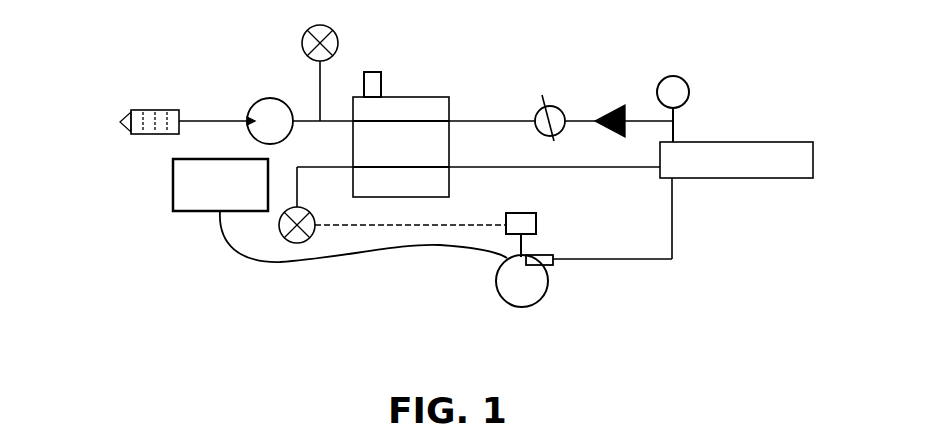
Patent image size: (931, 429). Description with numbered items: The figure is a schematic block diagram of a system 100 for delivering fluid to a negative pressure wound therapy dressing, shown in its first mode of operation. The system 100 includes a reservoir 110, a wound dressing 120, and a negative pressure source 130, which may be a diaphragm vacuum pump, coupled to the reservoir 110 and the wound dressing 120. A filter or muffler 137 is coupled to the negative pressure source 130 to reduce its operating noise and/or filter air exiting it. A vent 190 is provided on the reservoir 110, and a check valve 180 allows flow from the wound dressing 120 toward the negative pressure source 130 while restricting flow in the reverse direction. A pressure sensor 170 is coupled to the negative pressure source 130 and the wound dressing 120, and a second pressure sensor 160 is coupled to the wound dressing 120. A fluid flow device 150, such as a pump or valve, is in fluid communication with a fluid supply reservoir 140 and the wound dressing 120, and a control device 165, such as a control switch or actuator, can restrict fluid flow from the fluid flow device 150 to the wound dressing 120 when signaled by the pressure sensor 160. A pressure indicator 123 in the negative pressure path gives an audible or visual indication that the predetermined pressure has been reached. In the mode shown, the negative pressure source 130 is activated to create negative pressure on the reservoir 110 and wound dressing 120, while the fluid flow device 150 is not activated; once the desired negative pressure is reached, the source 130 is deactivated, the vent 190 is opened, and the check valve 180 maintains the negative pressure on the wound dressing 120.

The system 100 is at (162, 285).
The reservoir 110 is at (438, 97).
The wound dressing 120 is at (723, 178).
The pressure indicator 123 is at (687, 80).
The negative pressure source 130 is at (263, 100).
The filter or muffler 137 is at (141, 109).
The fluid supply reservoir 140 is at (173, 189).
The fluid flow device 150 is at (496, 290).
The pressure sensor 160 is at (311, 208).
The control device 165 is at (518, 213).
The pressure sensor 170 is at (304, 34).
The check valve 180 is at (560, 113).
The vent 190 is at (377, 72).